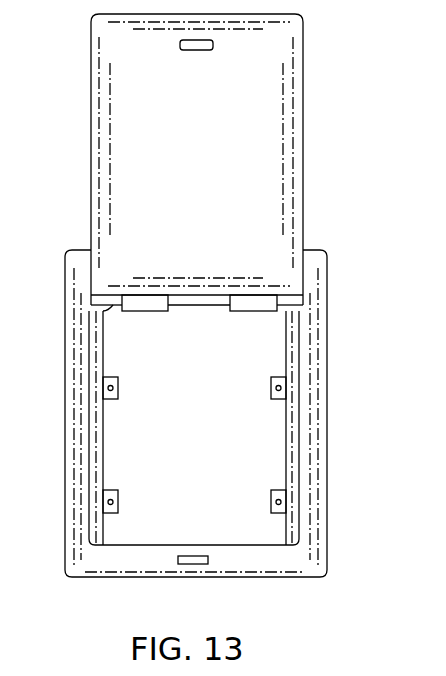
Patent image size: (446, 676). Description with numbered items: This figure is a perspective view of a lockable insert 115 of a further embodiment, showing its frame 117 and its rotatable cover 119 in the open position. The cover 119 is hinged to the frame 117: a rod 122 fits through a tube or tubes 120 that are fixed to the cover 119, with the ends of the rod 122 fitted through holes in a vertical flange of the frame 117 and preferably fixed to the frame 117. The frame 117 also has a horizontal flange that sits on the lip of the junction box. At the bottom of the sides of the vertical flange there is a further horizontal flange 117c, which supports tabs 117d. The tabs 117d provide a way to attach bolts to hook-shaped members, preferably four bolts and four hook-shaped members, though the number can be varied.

The lockable insert 115 is at (220, 444).
The frame 117 is at (327, 320).
The horizontal flange 117c is at (103, 445).
The tabs 117d is at (271, 388).
The rotatable cover 119 is at (303, 116).
The tubes 120 is at (243, 311).
The rod 122 is at (113, 308).